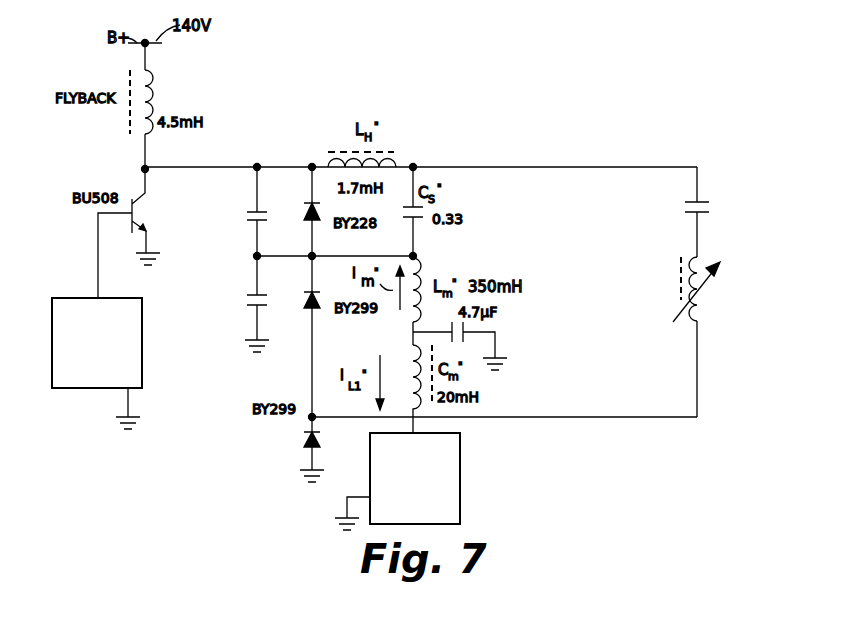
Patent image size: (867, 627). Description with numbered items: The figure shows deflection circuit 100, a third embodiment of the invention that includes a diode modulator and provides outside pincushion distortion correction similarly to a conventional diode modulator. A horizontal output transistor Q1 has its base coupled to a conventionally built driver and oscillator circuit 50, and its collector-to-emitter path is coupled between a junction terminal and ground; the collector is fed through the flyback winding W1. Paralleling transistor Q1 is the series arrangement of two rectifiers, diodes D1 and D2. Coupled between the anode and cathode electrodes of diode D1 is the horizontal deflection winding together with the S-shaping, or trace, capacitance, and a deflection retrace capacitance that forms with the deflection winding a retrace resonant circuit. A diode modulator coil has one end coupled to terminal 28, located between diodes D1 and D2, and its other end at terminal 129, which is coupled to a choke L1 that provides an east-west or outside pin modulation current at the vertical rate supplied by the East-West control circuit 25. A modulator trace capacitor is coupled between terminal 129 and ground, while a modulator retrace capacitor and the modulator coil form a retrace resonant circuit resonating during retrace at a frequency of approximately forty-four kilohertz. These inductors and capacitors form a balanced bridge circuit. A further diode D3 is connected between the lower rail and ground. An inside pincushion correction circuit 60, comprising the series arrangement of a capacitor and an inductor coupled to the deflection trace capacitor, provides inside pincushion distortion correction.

The junction terminal 28 is at (416, 255).
The terminal 129 is at (412, 332).
The inside pincushion correction circuit 60 is at (540, 245).
The deflection circuit 100 is at (212, 400).
The driver and oscillator circuit 50 is at (97, 388).
The East-West control circuit 25 is at (460, 486).
The horizontal output transistor Q1 is at (131, 207).
The flyback transformer winding W1 is at (159, 120).
The diode D1 is at (324, 210).
The diode D2 is at (324, 335).
The diode D3 is at (303, 448).
The choke L1 is at (408, 389).